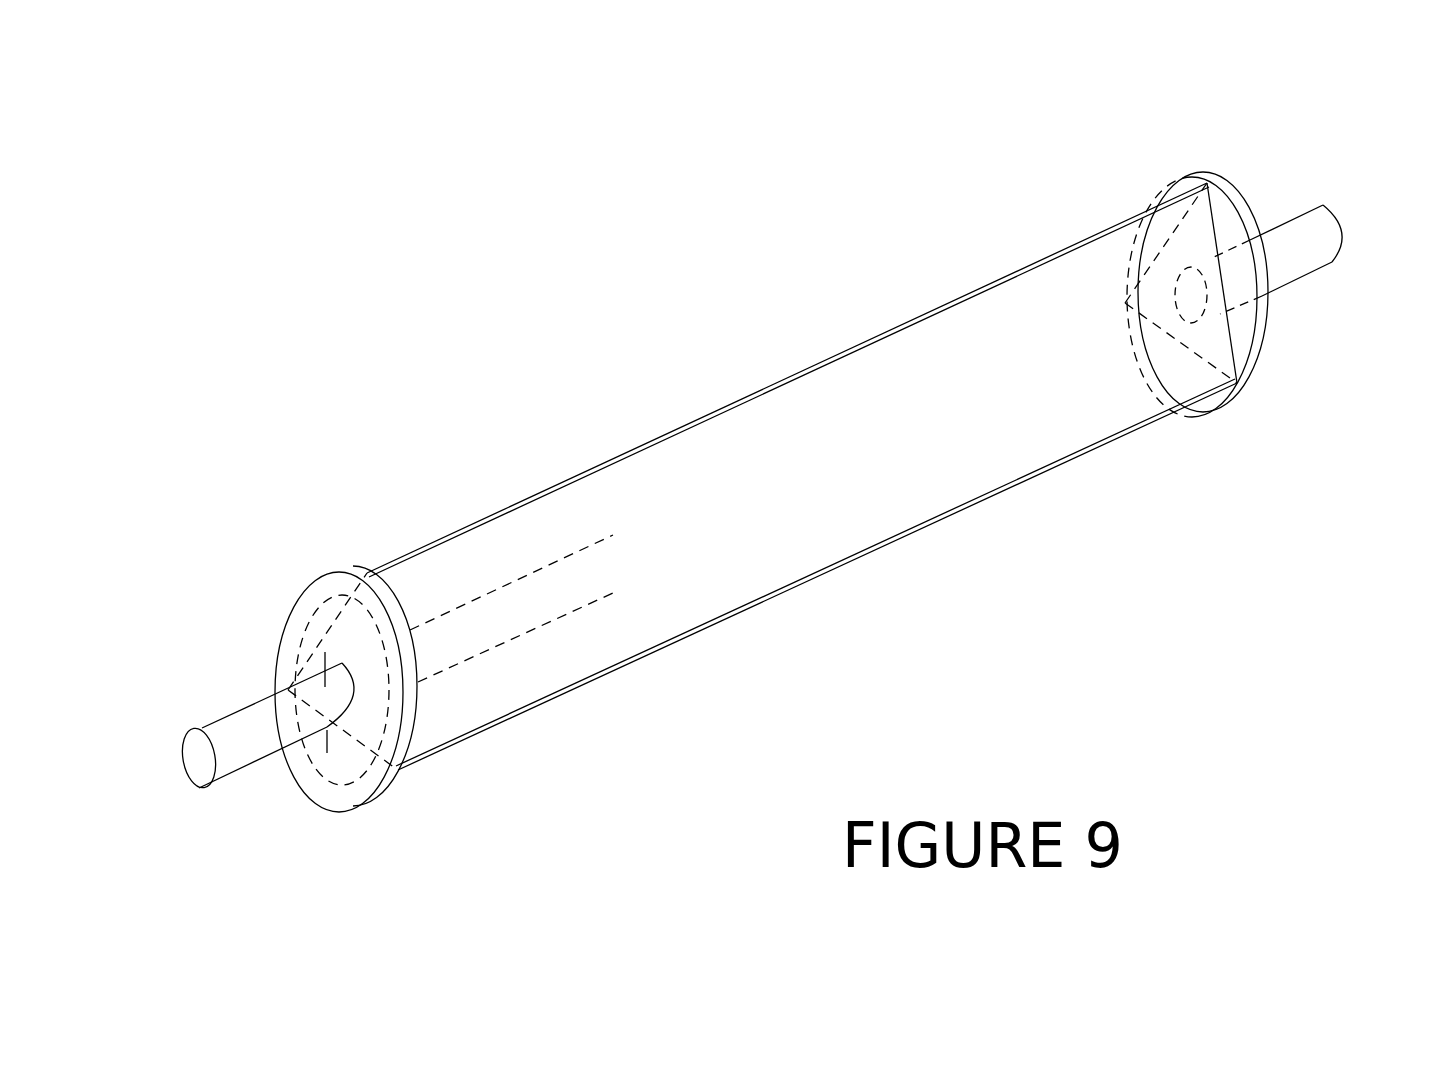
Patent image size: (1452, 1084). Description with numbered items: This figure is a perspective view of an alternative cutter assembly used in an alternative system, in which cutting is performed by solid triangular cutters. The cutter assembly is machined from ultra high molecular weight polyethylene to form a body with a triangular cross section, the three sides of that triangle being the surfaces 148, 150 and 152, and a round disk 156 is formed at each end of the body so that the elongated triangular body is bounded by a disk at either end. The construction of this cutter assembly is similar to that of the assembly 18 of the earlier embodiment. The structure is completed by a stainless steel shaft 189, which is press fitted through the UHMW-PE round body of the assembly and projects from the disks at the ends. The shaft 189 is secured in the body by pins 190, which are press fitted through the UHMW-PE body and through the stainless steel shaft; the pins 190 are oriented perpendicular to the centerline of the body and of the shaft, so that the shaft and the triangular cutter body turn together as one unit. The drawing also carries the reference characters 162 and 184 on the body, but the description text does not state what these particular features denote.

The assembly 18 is at (1303, 258).
The surface 148 is at (897, 488).
The surface 150 is at (338, 812).
The surface 152 is at (338, 610).
The round disk 156 is at (303, 780).
The slot 162 is at (522, 620).
The tube wall 184 is at (712, 410).
The stainless steel shaft 189 is at (237, 713).
The pins 190 is at (326, 664).